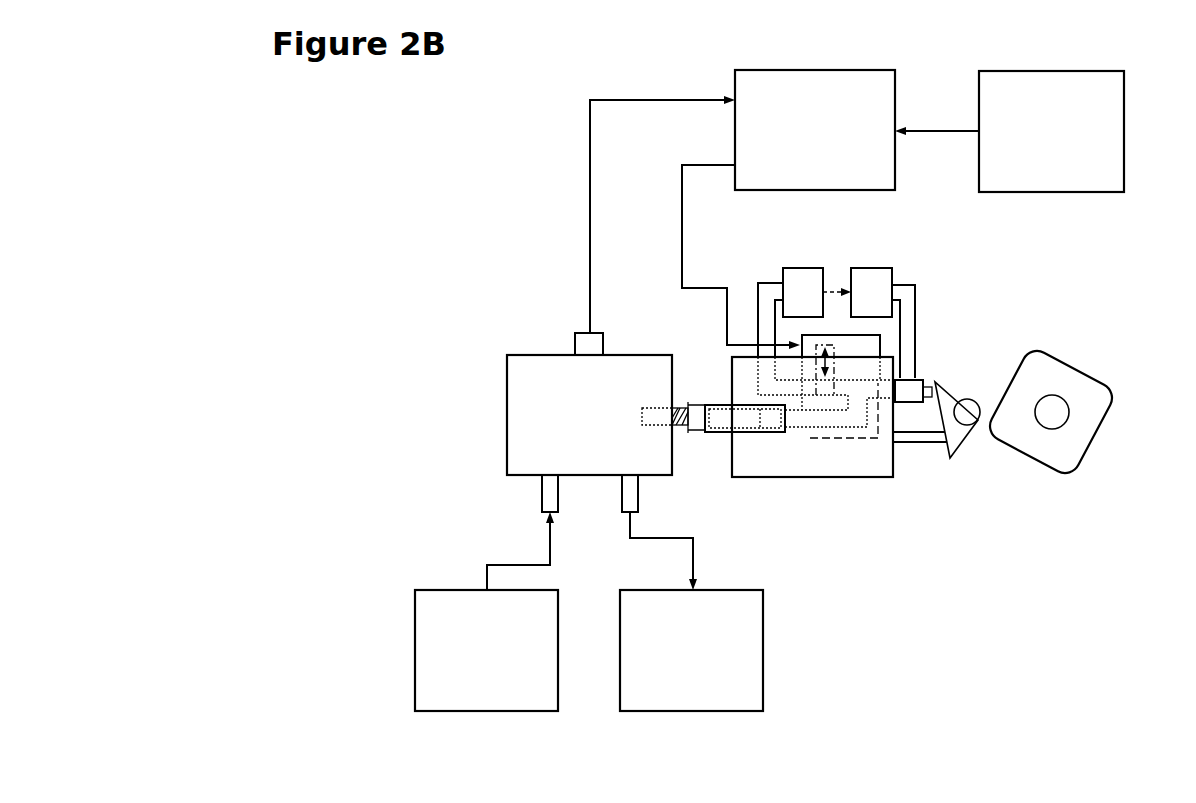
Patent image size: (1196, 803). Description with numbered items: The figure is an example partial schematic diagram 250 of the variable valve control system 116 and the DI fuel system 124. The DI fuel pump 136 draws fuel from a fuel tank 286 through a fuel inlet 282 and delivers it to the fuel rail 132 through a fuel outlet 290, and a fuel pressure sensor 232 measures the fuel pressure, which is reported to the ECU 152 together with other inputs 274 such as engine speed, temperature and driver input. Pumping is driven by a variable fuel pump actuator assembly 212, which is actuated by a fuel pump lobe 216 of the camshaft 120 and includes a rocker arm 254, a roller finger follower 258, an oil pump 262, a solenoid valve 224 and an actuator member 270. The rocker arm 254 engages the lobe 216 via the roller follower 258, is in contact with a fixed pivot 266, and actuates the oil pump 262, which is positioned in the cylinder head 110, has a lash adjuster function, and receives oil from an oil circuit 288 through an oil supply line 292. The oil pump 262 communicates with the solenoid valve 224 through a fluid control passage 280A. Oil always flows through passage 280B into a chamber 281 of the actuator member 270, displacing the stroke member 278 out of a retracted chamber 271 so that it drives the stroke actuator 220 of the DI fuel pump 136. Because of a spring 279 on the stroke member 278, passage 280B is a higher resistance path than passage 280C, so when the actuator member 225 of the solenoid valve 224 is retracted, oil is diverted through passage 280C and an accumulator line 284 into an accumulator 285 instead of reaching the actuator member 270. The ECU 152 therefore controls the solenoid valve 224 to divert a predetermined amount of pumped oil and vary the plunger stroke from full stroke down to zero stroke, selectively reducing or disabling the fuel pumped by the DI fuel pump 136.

The cylinder head 110 is at (851, 478).
The variable valve control system 116 is at (1088, 650).
The camshaft 120 is at (1065, 394).
The DI fuel system 124 is at (350, 391).
The fuel rail 132 is at (693, 711).
The DI fuel pump 136 is at (507, 385).
The ECU 152 is at (818, 70).
The variable fuel pump actuator assembly 212 is at (900, 505).
The fuel pump lobe 216 is at (1099, 437).
The stroke actuator 220 is at (693, 470).
The solenoid valve 224 is at (858, 335).
The actuator member 225 is at (817, 345).
The fuel pressure sensor 232 is at (575, 343).
The partial schematic diagram 250 is at (358, 150).
The rocker arm 254 is at (950, 458).
The roller finger follower 258 is at (970, 425).
The oil pump 262 is at (925, 387).
The fixed pivot 266 is at (918, 432).
The actuator member 270 is at (705, 432).
The retracted chamber 271 is at (744, 407).
The other inputs 274 is at (1053, 71).
The stroke member 278 is at (693, 432).
The spring 279 is at (682, 428).
The fluid control passage 280A is at (887, 398).
The passage 280B is at (815, 437).
The passage 280C is at (760, 377).
The chamber 281 is at (768, 432).
The fuel inlet 282 is at (542, 487).
The accumulator line 284 is at (760, 317).
The accumulator 285 is at (783, 273).
The fuel tank 286 is at (487, 711).
The oil circuit 288 is at (860, 268).
The fuel outlet 290 is at (622, 505).
The oil supply line 292 is at (917, 320).